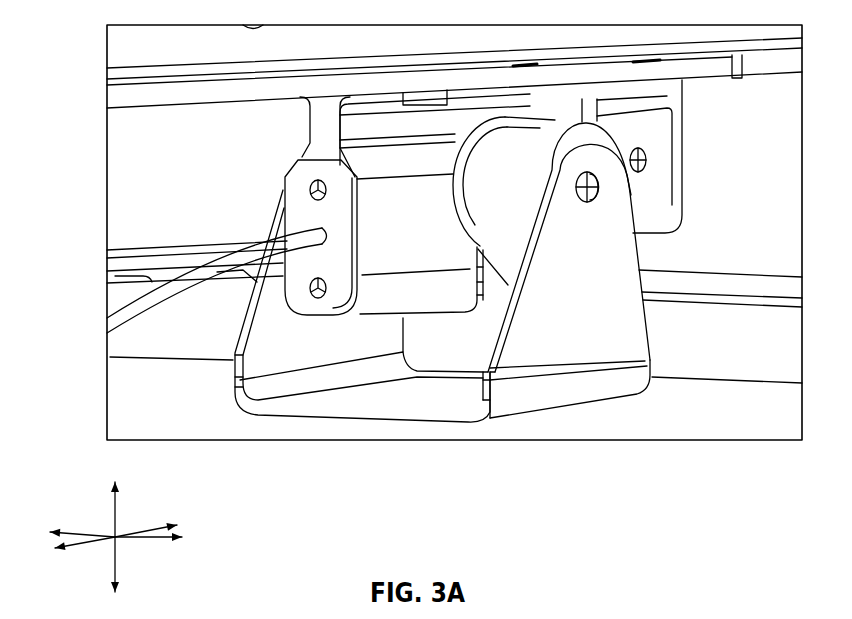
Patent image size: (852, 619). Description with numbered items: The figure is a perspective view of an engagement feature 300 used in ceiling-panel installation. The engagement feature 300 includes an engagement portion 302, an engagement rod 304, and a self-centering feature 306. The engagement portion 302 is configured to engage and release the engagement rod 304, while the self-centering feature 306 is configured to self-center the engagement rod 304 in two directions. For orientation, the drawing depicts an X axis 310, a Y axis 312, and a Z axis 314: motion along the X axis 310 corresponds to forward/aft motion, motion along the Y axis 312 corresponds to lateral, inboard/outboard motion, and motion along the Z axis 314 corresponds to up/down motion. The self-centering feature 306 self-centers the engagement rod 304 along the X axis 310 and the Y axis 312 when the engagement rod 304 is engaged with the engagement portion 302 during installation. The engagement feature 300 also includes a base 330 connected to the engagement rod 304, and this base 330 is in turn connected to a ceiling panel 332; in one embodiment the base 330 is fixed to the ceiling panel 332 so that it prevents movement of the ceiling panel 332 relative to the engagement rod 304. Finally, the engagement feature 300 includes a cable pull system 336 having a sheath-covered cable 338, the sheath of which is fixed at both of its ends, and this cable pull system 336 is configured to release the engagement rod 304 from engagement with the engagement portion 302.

The engagement feature 300 is at (128, 152).
The engagement portion 302 is at (310, 117).
The engagement rod 304 is at (583, 137).
The self-centering feature 306 is at (458, 327).
The X axis 310 is at (147, 537).
The Y axis 312 is at (88, 545).
The Z axis 314 is at (113, 507).
The base 330 is at (320, 417).
The ceiling panel 332 is at (708, 422).
The cable pull system 336 is at (268, 189).
The sheath-covered cable 338 is at (213, 243).